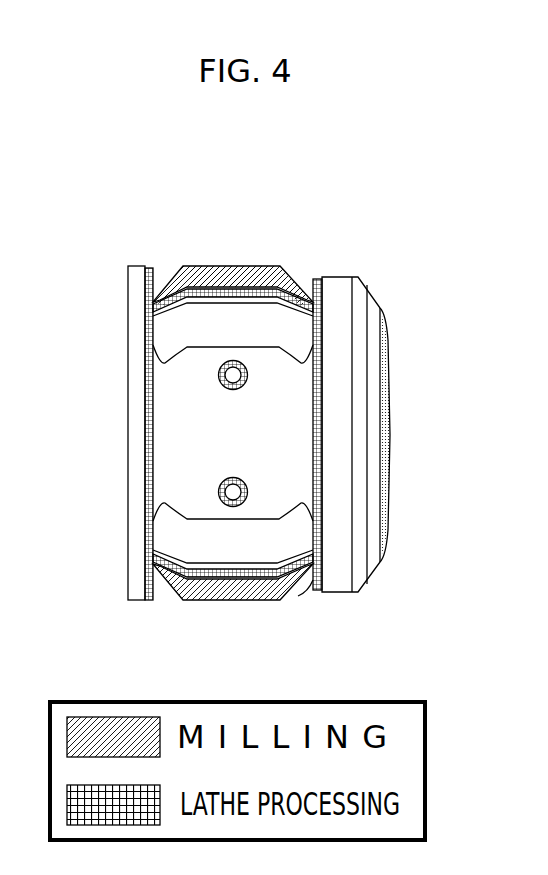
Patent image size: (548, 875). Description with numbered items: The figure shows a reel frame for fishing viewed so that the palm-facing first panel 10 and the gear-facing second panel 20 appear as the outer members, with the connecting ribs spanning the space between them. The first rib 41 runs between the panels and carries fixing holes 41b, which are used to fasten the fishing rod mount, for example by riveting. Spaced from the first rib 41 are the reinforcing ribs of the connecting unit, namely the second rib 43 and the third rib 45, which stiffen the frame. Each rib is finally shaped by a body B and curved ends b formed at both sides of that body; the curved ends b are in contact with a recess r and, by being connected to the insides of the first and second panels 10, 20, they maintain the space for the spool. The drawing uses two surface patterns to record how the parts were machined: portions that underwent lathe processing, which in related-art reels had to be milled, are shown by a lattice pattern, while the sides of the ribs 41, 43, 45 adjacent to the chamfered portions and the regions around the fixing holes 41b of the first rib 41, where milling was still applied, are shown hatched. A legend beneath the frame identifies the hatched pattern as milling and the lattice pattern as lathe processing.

The first panel 10 is at (392, 280).
The second panel 20 is at (114, 290).
The first rib 41 is at (197, 500).
The fixing holes 41b is at (232, 378).
The second rib 43 is at (233, 603).
The third rib 45 is at (277, 216).
The curved ends b is at (160, 292).
The body B is at (227, 266).
The recess r is at (303, 590).